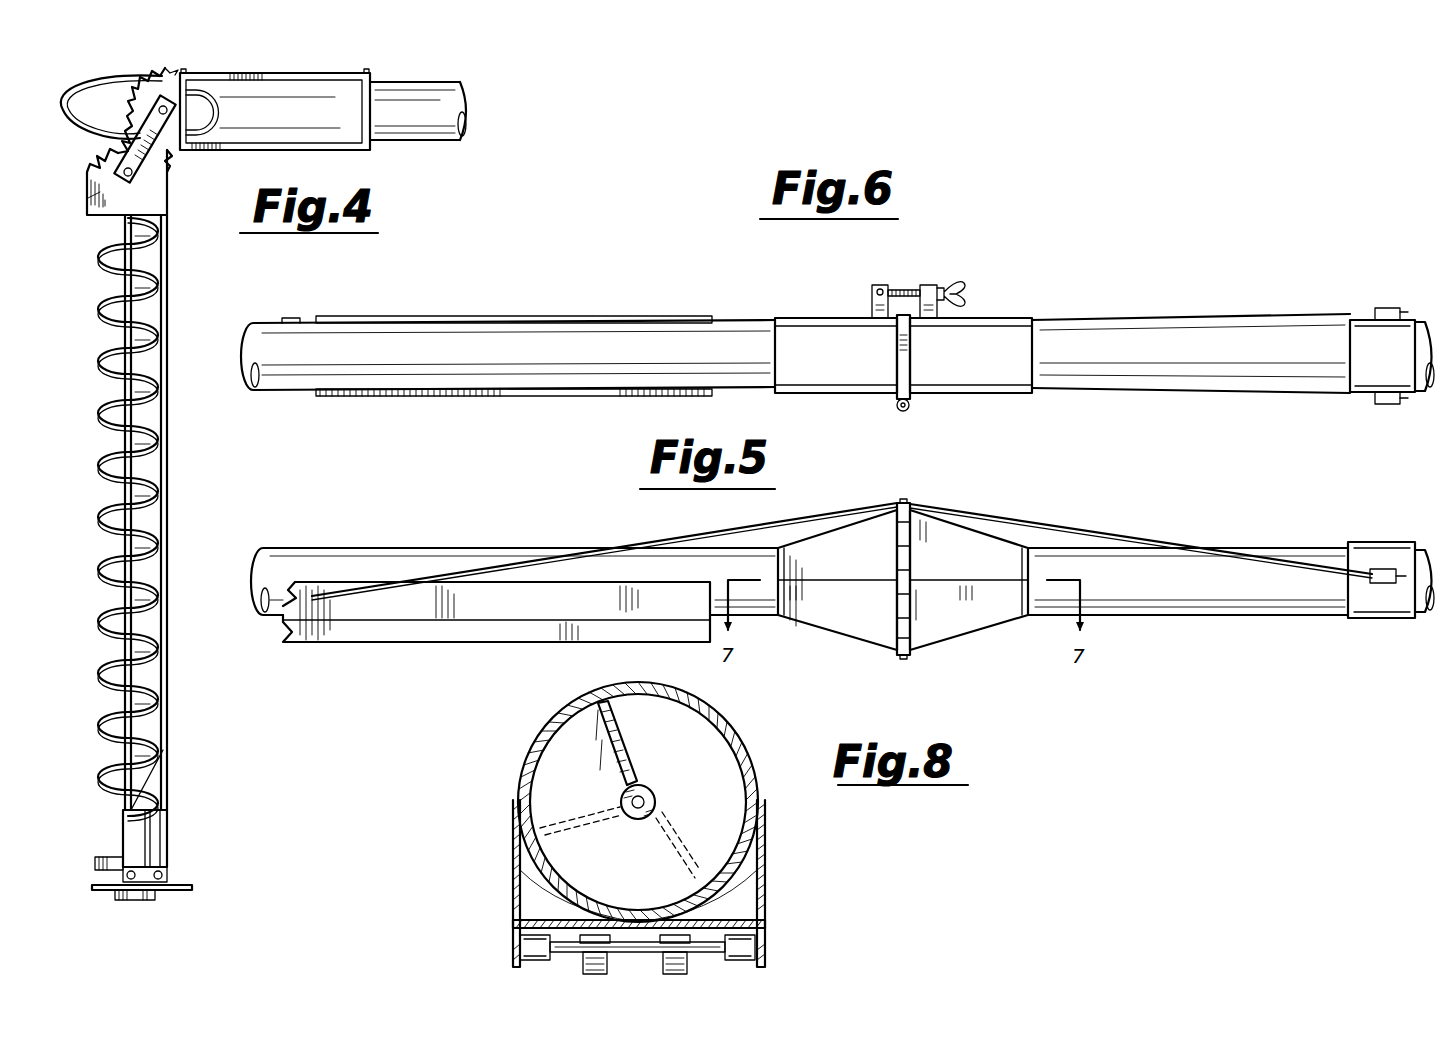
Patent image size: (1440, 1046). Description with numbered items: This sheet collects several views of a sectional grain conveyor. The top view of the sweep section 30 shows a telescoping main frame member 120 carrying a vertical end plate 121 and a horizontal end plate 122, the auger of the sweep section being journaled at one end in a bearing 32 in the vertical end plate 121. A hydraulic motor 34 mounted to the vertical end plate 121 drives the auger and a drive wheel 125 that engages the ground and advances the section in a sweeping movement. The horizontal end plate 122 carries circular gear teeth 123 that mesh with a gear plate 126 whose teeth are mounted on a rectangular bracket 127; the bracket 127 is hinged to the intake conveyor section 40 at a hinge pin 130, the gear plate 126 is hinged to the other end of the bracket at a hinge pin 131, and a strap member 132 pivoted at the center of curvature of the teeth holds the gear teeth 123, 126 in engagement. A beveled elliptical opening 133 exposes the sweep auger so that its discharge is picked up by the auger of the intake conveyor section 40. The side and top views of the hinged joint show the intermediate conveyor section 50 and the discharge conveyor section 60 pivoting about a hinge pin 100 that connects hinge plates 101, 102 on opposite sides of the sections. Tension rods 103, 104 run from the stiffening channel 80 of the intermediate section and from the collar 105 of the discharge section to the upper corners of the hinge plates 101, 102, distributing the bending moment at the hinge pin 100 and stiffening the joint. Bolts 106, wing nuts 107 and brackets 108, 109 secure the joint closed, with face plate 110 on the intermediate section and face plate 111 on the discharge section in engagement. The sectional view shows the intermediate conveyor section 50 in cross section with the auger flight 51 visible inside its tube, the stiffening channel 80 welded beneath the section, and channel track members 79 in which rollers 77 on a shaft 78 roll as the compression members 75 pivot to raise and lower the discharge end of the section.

In FIG. 4, the sweep section 30 is at (85, 447).
In FIG. 4, the bearing 32 is at (128, 900).
In FIG. 4, the hydraulic motor 34 is at (170, 840).
In FIG. 4, the intake conveyor section 40 is at (412, 147).
In FIG. 6, the intermediate conveyor section 50 is at (413, 316).
In FIG. 5, the intermediate conveyor section 50 is at (482, 532).
In FIG. 8, the intermediate conveyor section 50 is at (740, 720).
In FIG. 8, the conveyor auger blade 51 is at (606, 742).
In FIG. 6, the discharge conveyor section 60 is at (1283, 305).
In FIG. 5, the discharge conveyor section 60 is at (1246, 532).
In FIG. 8, the compression members 75 is at (580, 968).
In FIG. 8, the rollers 77 is at (513, 932).
In FIG. 8, the shaft 78 is at (640, 952).
In FIG. 5, the channel track members 79 is at (443, 634).
In FIG. 8, the channel track members 79 is at (520, 947).
In FIG. 6, the stiffening channel 80 is at (262, 318).
In FIG. 5, the stiffening channel 80 is at (408, 610).
In FIG. 8, the stiffening channel 80 is at (513, 836).
In FIG. 6, the hinge pin 100 is at (908, 412).
In FIG. 5, the hinge pin 100 is at (905, 500).
In FIG. 6, the hinge plate 101 is at (810, 318).
In FIG. 5, the hinge plate 101 is at (830, 560).
In FIG. 6, the hinge plate 102 is at (975, 318).
In FIG. 5, the hinge plate 102 is at (968, 560).
In FIG. 6, the tension rod 103 is at (703, 316).
In FIG. 5, the tension rod 103 is at (562, 560).
In FIG. 6, the tension rod 104 is at (1137, 318).
In FIG. 5, the tension rod 104 is at (1100, 540).
In FIG. 6, the collar 105 is at (1368, 367).
In FIG. 5, the collar 105 is at (1390, 542).
In FIG. 6, the bolts 106 is at (904, 289).
In FIG. 6, the wing nuts 107 is at (945, 291).
In FIG. 6, the bracket 108 is at (876, 285).
In FIG. 6, the bracket 109 is at (952, 284).
In FIG. 6, the face plate 110 is at (895, 385).
In FIG. 6, the face plate 111 is at (913, 372).
In FIG. 4, the main frame member 120 is at (168, 310).
In FIG. 4, the vertical end plate 121 is at (180, 890).
In FIG. 4, the horizontal end plate 122 is at (94, 205).
In FIG. 4, the gear teeth 123 is at (88, 162).
In FIG. 4, the drive wheel 125 is at (110, 860).
In FIG. 4, the gear plate 126 is at (117, 95).
In FIG. 4, the rectangular bracket 127 is at (274, 73).
In FIG. 4, the hinge pin 130 is at (370, 72).
In FIG. 4, the hinge pin 131 is at (172, 70).
In FIG. 4, the strap member 132 is at (170, 140).
In FIG. 4, the beveled elliptical opening 133 is at (86, 86).